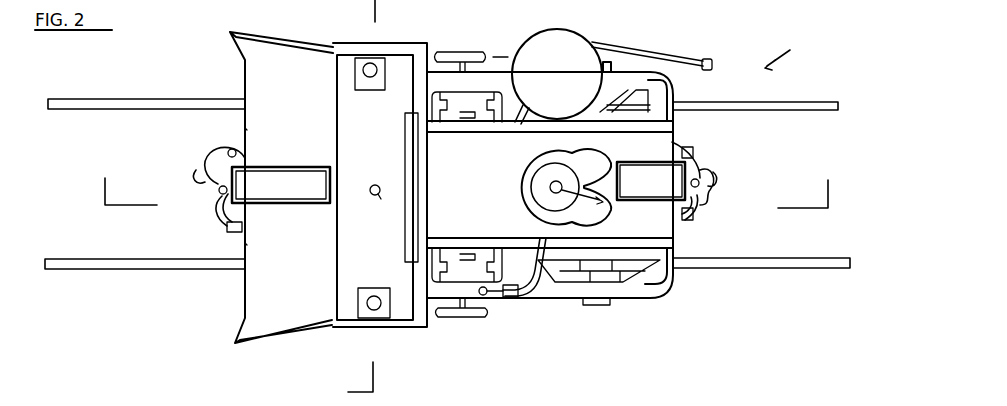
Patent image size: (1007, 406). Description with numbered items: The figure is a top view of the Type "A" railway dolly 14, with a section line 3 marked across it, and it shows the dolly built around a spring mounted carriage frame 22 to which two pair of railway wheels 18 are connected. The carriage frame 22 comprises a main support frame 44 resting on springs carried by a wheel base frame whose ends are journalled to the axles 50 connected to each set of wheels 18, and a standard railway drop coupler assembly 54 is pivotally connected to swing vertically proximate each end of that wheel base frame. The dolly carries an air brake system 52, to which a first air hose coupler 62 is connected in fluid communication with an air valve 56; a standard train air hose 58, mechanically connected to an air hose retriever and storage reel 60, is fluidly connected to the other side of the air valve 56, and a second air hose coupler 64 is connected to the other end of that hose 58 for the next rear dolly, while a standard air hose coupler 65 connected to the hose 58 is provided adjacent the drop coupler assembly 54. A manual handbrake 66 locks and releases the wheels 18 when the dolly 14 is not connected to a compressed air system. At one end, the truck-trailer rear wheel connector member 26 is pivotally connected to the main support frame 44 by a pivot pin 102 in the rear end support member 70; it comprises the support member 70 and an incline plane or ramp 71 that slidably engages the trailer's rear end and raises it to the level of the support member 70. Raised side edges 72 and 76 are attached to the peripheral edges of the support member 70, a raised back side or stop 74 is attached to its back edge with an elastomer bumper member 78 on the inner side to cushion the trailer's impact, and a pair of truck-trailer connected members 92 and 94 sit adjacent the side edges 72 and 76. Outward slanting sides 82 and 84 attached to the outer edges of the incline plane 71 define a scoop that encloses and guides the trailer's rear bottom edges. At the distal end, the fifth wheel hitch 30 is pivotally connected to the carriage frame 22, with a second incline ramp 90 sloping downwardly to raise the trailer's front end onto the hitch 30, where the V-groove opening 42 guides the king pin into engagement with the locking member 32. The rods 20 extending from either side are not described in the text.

The section line 3 is at (466, 182).
The Type "A" railway dolly 14 is at (568, 200).
The railway wheels 18 is at (628, 118).
The support rods 20 is at (113, 98).
The spring mounted carriage frame 22 is at (566, 306).
The truck-trailer rear wheel connector member 26 is at (238, 296).
The fifth wheel hitch 30 is at (515, 202).
The locking member 32 is at (532, 170).
The V-groove opening 42 is at (605, 202).
The main support frame 44 is at (675, 92).
The axles 50 is at (610, 306).
The air brake system 52 is at (478, 118).
The railway drop coupler assembly 54 is at (205, 175).
The air valve 56 is at (514, 300).
The standard train air hose 58 is at (638, 52).
The air hose retriever and storage reel 60 is at (558, 30).
The first air hose coupler 62 is at (488, 297).
The second air hose coupler 64 is at (710, 60).
The standard air hose coupler 65 is at (235, 232).
The manual handbrake 66 is at (455, 52).
The truck-trailer rear end support member 70 is at (350, 130).
The incline plane or ramp 71 is at (250, 130).
The raised side edge 72 is at (362, 328).
The raised back side or stop 74 is at (427, 196).
The raised side edge 76 is at (377, 50).
The elastomer bumper member 78 is at (405, 153).
The outward slanting side 82 is at (240, 345).
The outward slanting side 84 is at (243, 30).
The second incline ramp or plane 90 is at (662, 143).
The truck-trailer connected member 92 is at (378, 90).
The truck-trailer connected member 94 is at (378, 288).
The pivot pin 102 is at (380, 197).